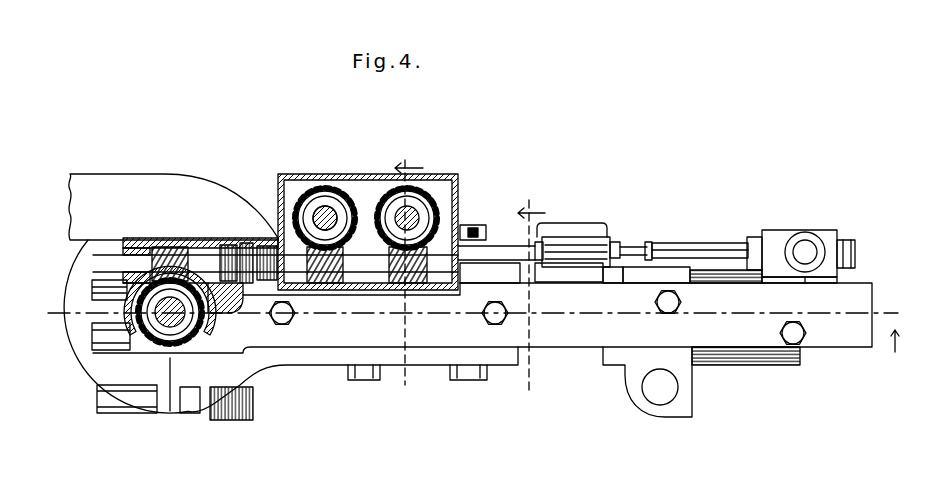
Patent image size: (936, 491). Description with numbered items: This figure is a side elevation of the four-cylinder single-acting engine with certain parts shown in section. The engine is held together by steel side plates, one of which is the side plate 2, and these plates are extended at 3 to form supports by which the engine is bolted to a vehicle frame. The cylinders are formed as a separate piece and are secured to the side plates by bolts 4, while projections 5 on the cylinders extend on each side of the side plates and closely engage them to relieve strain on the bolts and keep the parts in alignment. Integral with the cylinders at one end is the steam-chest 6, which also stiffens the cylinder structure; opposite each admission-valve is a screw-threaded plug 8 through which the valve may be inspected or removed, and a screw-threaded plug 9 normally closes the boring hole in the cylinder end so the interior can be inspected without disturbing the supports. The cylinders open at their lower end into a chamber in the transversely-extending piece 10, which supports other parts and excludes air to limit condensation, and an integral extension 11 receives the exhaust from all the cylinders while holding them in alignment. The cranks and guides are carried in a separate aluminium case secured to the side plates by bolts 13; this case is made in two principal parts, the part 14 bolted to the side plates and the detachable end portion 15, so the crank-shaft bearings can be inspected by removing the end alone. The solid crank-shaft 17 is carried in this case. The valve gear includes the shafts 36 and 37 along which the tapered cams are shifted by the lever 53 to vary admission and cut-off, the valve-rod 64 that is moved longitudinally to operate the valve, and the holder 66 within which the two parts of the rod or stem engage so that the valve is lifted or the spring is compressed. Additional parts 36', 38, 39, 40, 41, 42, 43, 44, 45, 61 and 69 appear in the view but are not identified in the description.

The side plate 2 is at (473, 325).
The extension 3 is at (89, 178).
The bolts 4 is at (672, 306).
The projections 5 is at (409, 260).
The steam-chest 6 is at (781, 230).
The screw-threaded plug 8 is at (856, 257).
The screw-threaded plug 9 is at (531, 286).
The transversely-extending piece 10 is at (616, 272).
The extension 11 is at (682, 407).
The bolts 13 is at (287, 318).
The case part 14 is at (305, 353).
The case end portion 15 is at (76, 325).
The crank-shaft 17 is at (206, 321).
The shaft 36 is at (307, 183).
The threaded member 36' is at (231, 420).
The shaft 37 is at (458, 223).
The gear 38 is at (163, 330).
The shaft 39 is at (200, 253).
The worm 40 is at (338, 291).
The worm 41 is at (415, 291).
The worm gear 42 is at (326, 212).
The worm gear 43 is at (416, 196).
The nut stack 44 is at (243, 243).
The gear housing 45 is at (459, 181).
The lever 53 is at (553, 230).
The nuts 61 is at (365, 374).
The valve-rod 64 is at (507, 250).
The holder 66 is at (581, 241).
The rod 69 is at (689, 246).